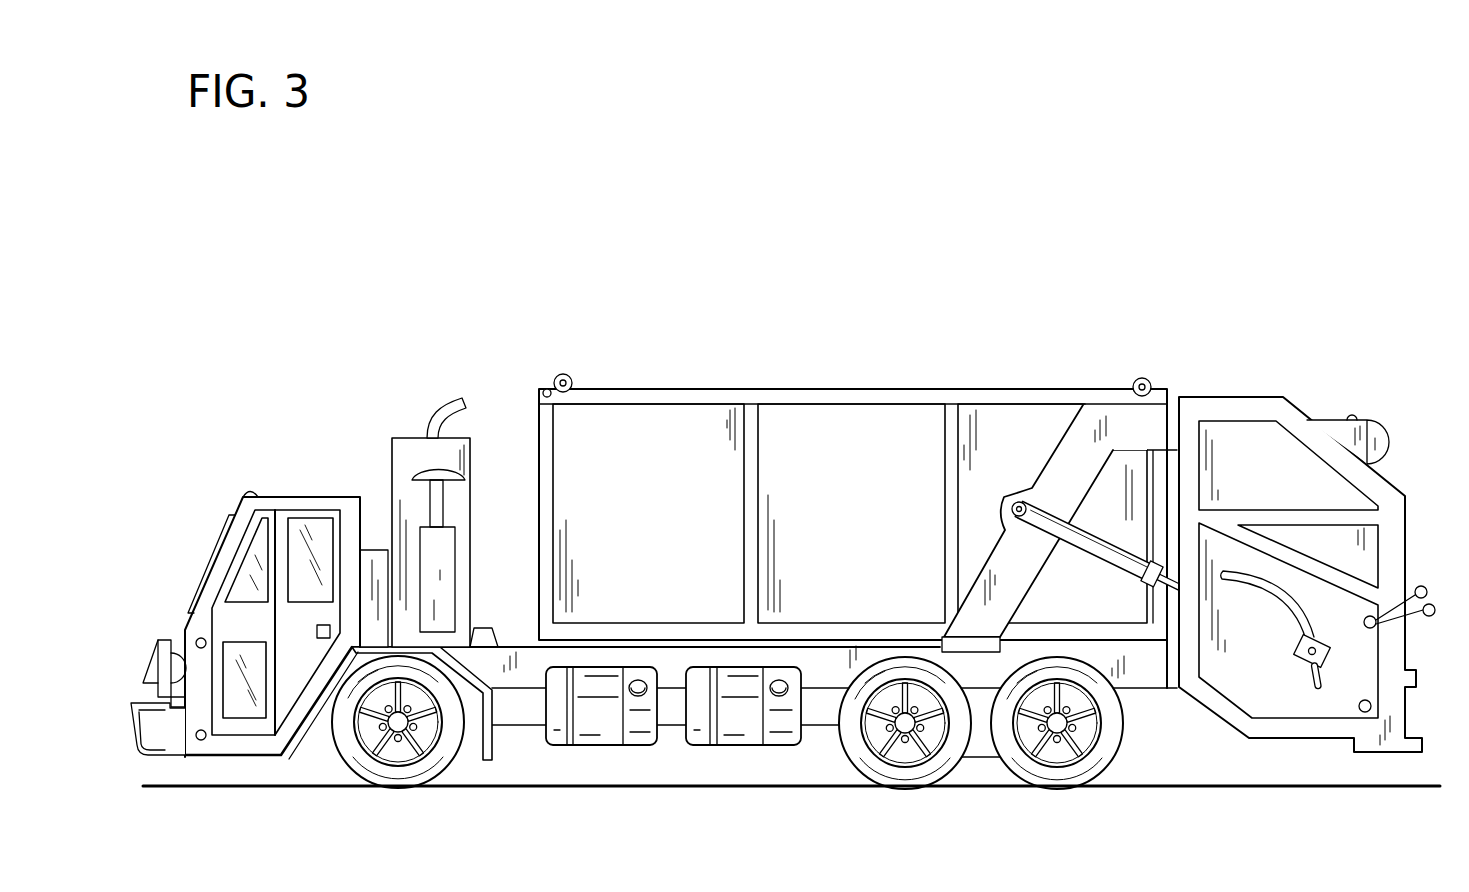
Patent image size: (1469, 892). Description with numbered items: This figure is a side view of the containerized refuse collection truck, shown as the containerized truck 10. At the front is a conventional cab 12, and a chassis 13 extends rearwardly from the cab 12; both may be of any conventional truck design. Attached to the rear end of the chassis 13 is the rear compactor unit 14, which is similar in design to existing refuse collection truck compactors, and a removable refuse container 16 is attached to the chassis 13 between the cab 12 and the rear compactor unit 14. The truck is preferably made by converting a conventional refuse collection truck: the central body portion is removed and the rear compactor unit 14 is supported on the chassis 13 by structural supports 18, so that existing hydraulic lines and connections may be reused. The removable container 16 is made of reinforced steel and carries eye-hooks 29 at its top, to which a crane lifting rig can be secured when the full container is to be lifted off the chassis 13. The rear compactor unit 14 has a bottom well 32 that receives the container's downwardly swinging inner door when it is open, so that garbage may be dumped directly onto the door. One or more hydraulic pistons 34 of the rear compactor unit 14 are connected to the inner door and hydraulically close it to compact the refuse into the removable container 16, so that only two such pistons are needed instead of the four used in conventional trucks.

The containerized truck 10 is at (785, 540).
The cab 12 is at (280, 492).
The chassis 13 is at (1133, 677).
The rear compactor unit 14 is at (1273, 395).
The removable refuse container 16 is at (818, 387).
The structural supports 18 is at (1050, 455).
The eye-hooks 29 is at (557, 375).
The bottom well 32 is at (1307, 697).
The hydraulic pistons 34 is at (1127, 540).